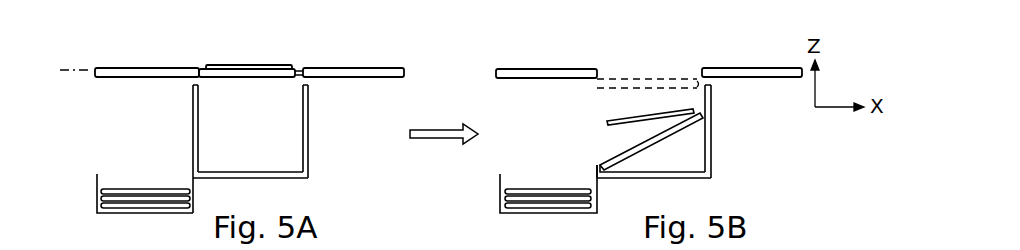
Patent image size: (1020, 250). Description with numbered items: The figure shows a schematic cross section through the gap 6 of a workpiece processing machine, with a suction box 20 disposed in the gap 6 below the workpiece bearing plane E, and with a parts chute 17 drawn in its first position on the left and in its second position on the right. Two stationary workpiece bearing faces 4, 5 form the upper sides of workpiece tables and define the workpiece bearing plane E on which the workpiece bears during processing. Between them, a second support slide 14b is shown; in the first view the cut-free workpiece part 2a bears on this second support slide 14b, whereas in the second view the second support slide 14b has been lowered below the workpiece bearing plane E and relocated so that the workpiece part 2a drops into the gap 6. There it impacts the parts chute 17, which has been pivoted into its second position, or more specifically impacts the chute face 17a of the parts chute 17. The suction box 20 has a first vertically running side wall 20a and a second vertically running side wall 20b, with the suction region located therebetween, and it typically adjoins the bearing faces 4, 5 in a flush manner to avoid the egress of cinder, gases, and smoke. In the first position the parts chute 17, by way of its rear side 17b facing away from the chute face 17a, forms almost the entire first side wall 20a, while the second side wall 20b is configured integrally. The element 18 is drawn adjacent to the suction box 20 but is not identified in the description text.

In FIG. 5A, the workpiece bearing plane E is at (68, 68).
In FIG. 5A, the workpiece bearing face 4 is at (148, 68).
In FIG. 5B, the workpiece bearing face 4 is at (540, 69).
In FIG. 5A, the second support slide 14b is at (232, 67).
In FIG. 5B, the second support slide 14b is at (643, 80).
In FIG. 5A, the workpiece part 2a is at (258, 65).
In FIG. 5B, the workpiece part 2a is at (638, 116).
In FIG. 5A, the workpiece bearing face 5 is at (366, 68).
In FIG. 5B, the workpiece bearing face 5 is at (758, 68).
In FIG. 5B, the gap 6 is at (622, 68).
In FIG. 5A, the suction box 20 is at (312, 120).
In FIG. 5B, the suction box 20 is at (722, 147).
In FIG. 5A, the first vertically running side wall 20a is at (193, 125).
In FIG. 5A, the second vertically running side wall 20b is at (309, 173).
In FIG. 5A, the parts chute 17 is at (192, 97).
In FIG. 5B, the parts chute 17 is at (636, 147).
In FIG. 5A, the chute face 17a is at (193, 147).
In FIG. 5A, the rear side 17b is at (198, 134).
In FIG. 5A, the drive / spring stack 18 is at (97, 188).
In FIG. 5B, the drive / spring stack 18 is at (500, 190).